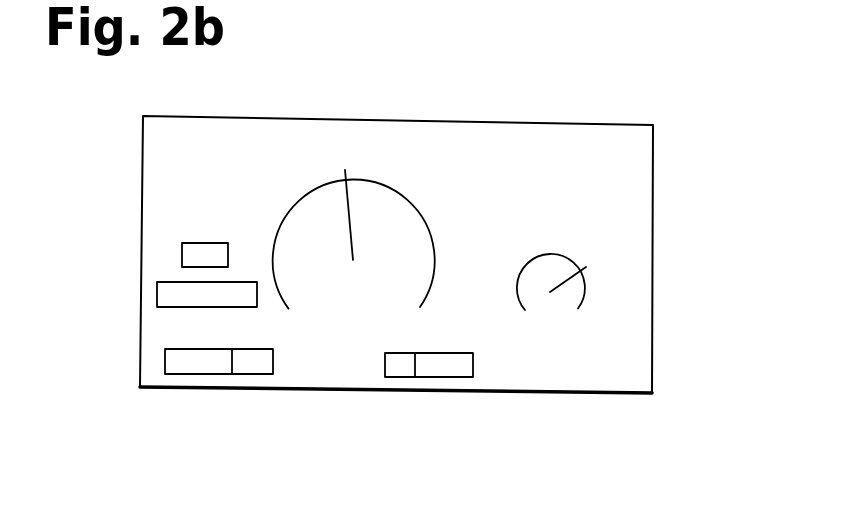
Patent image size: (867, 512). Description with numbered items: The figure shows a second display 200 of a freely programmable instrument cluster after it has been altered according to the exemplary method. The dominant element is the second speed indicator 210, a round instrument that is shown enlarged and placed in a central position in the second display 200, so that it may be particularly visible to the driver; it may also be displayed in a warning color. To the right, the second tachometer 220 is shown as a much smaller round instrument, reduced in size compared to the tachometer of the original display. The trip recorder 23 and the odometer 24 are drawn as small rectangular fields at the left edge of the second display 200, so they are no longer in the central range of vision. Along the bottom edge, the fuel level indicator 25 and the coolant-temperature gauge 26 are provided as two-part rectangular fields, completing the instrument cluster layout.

The second display 200 is at (654, 171).
The second speed indicator 210 is at (370, 183).
The second tachometer 220 is at (587, 290).
The trip recorder 23 is at (186, 260).
The odometer 24 is at (164, 296).
The fuel level indicator 25 is at (200, 363).
The coolant-temperature gauge 26 is at (446, 368).